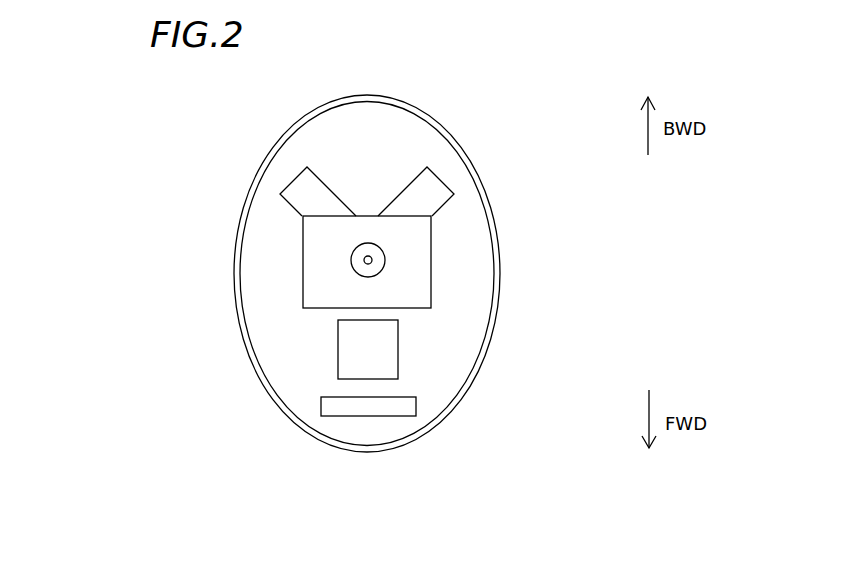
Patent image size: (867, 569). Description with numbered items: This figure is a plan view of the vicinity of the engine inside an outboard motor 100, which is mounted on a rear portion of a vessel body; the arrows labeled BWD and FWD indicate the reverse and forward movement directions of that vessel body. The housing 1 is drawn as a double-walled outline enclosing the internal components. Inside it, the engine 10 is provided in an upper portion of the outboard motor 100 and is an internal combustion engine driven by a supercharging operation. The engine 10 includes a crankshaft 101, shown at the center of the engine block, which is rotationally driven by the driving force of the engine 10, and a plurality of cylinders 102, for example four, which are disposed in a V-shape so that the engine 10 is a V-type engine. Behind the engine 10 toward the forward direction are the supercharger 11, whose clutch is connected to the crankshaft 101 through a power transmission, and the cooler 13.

The outboard motor 100 is at (453, 85).
The housing 1 is at (498, 202).
The engine 10 is at (432, 260).
The crankshaft 101 is at (364, 262).
The cylinders 102 is at (287, 202).
The supercharger 11 is at (398, 348).
The cooler 13 is at (416, 405).